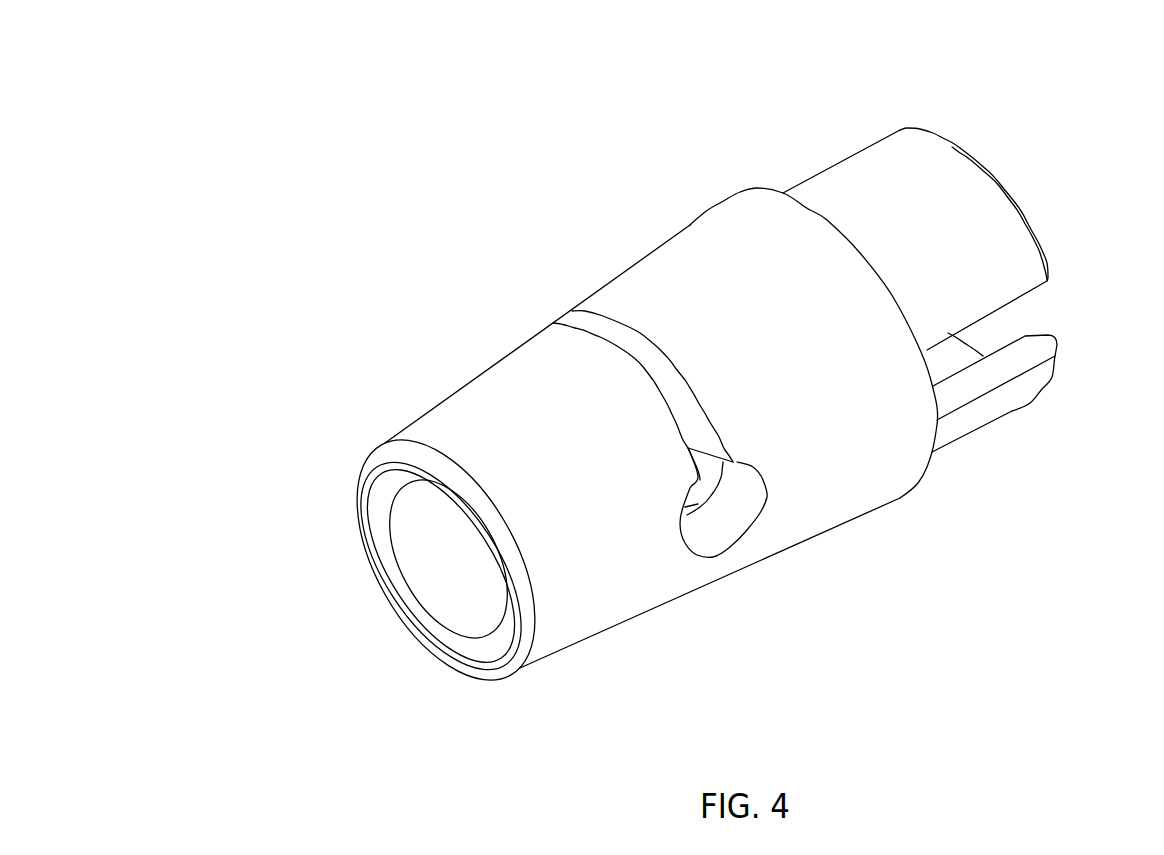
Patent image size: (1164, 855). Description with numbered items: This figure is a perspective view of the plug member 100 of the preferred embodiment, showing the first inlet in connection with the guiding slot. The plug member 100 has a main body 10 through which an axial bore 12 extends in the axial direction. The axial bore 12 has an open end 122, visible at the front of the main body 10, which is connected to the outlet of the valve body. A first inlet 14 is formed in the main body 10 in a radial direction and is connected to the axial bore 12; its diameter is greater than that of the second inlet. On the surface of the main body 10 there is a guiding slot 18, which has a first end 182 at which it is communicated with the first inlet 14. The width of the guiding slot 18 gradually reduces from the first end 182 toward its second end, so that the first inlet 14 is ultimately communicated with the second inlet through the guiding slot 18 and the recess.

The plug member 100 is at (1085, 157).
The main body 10 is at (723, 258).
The axial bore 12 is at (440, 595).
The open end 122 is at (390, 591).
The first inlet 14 is at (738, 518).
The guiding slot 18 is at (641, 347).
The first end 182 is at (697, 418).